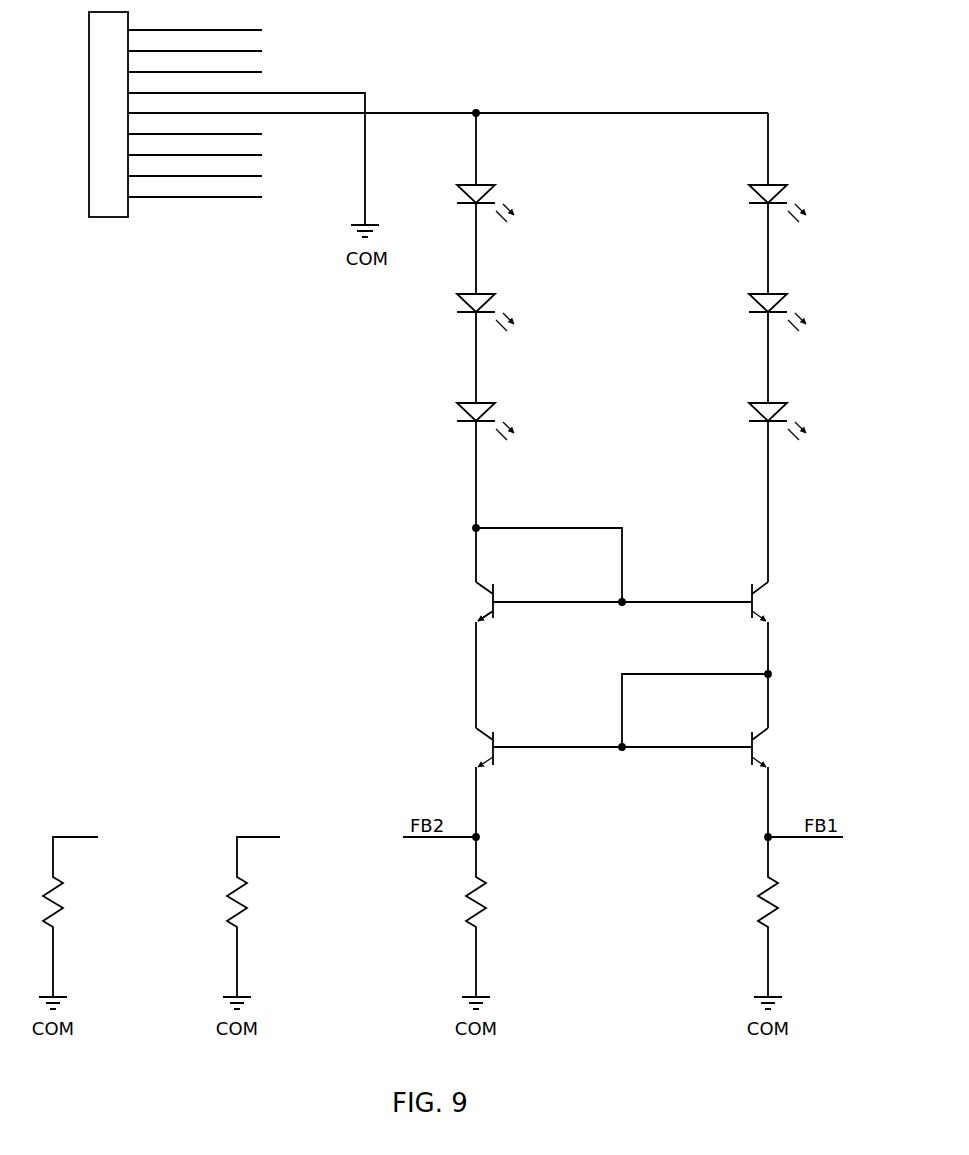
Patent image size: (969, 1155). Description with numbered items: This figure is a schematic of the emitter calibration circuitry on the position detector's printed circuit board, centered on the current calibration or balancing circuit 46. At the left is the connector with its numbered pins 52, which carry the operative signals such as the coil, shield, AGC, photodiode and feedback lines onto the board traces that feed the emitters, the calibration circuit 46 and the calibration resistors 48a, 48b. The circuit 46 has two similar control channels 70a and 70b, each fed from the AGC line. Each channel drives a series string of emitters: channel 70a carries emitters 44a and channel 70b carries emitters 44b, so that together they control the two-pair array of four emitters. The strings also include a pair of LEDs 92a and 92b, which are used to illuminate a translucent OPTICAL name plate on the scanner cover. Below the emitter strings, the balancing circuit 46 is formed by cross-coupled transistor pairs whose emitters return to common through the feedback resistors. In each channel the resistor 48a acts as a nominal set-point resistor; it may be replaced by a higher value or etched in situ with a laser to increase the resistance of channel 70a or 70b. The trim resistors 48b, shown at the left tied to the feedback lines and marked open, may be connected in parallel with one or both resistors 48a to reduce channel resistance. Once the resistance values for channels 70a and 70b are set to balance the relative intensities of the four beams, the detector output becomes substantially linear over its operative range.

The pins 52 is at (112, 217).
The control channel 70a is at (467, 101).
The control channel 70b is at (760, 101).
The LED 92a is at (471, 204).
The LED 92b is at (763, 204).
The emitter 44a is at (471, 313).
The emitter 44b is at (763, 313).
The current calibration or balancing circuit 46 is at (650, 505).
The calibration resistor 48a is at (479, 877).
The calibration resistor 48b is at (57, 898).